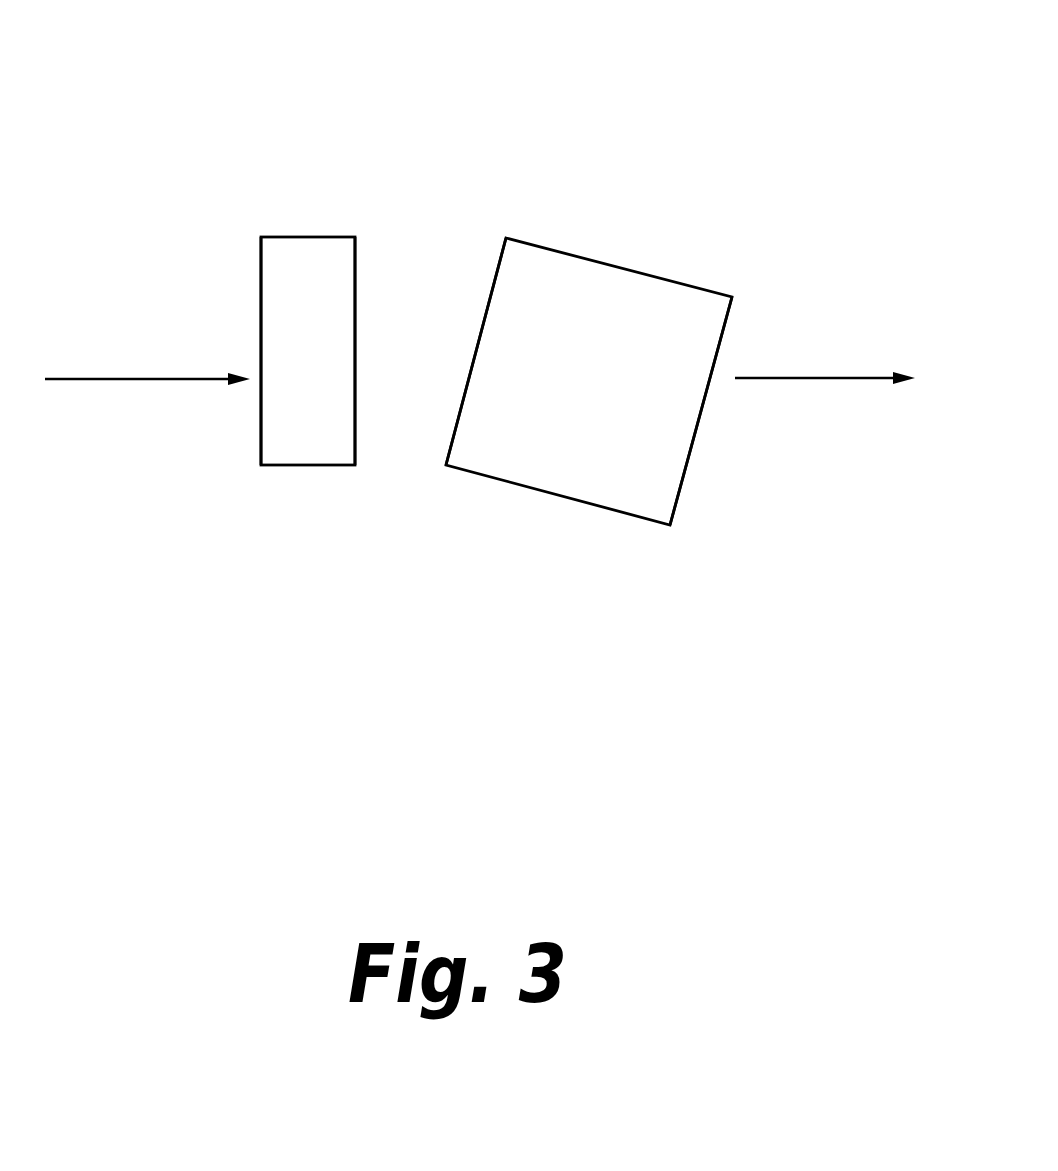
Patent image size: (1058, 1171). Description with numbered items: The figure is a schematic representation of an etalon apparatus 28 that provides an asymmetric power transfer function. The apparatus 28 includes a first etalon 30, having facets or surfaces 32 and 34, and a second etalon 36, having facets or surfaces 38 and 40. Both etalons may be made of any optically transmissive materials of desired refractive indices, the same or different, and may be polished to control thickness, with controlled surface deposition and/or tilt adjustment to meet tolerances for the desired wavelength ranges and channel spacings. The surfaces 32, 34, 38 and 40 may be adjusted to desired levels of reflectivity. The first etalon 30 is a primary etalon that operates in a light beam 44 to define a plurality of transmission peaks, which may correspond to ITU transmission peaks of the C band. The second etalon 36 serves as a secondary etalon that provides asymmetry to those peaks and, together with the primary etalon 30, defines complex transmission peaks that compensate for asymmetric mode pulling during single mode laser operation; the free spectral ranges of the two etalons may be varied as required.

The etalon apparatus 28 is at (680, 96).
The first etalon 30 is at (293, 252).
The surface of first etalon 32 is at (261, 273).
The surface of first etalon 34 is at (355, 272).
The second etalon 36 is at (617, 285).
The surface of second etalon 38 is at (450, 443).
The surface of second etalon 40 is at (682, 492).
The light beam 44 is at (137, 377).